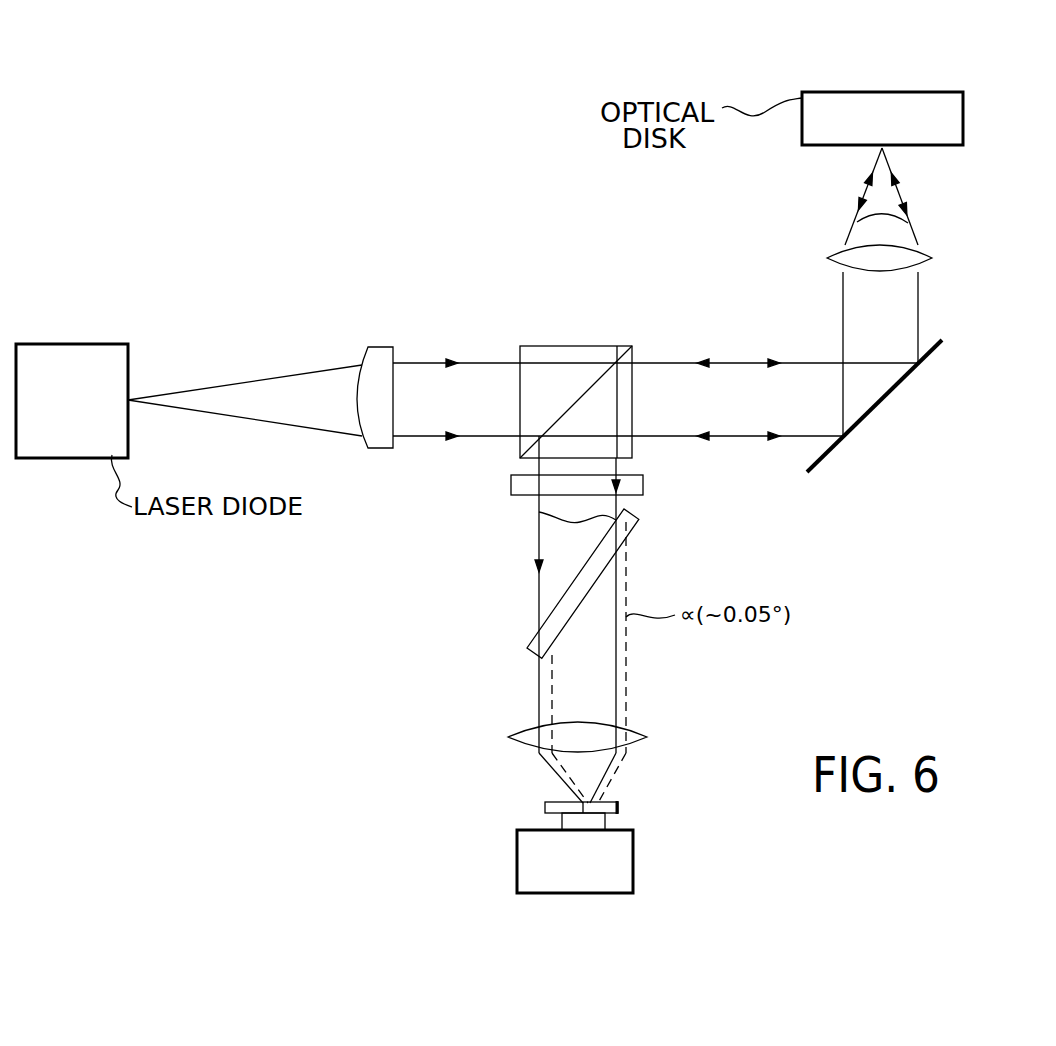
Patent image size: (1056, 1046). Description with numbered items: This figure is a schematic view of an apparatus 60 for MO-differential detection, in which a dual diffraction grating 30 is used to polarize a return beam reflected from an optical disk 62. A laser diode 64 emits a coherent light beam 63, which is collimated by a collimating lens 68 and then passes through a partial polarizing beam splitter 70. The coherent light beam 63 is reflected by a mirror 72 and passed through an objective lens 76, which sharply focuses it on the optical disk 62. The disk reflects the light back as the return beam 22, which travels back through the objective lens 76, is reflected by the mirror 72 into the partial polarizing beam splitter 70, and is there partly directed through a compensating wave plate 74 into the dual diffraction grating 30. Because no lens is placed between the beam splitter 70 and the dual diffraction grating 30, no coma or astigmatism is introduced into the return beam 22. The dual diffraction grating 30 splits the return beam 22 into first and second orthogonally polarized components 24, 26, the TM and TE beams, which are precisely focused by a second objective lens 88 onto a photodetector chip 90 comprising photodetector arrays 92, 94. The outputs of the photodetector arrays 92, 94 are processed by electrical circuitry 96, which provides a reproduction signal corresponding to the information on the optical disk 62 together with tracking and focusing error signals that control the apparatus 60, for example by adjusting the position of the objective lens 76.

The return beam 22 is at (685, 366).
The first orthogonally polarized component 24 is at (539, 694).
The second orthogonally polarized component 26 is at (626, 690).
The dual diffraction grating 30 is at (510, 640).
The apparatus 60 is at (417, 344).
The optical disk 62 is at (868, 130).
The coherent light beam 63 is at (790, 366).
The laser diode 64 is at (47, 413).
The collimating lens 68 is at (376, 450).
The partial polarizing beam splitter 70 is at (556, 350).
The mirror 72 is at (822, 463).
The compensating wave plate 74 is at (643, 482).
The objective lens 76 is at (925, 262).
The objective lens 88 is at (640, 735).
The photodetector chip 90 is at (620, 795).
The photodetector array 92 is at (545, 808).
The photodetector array 94 is at (610, 815).
The electrical circuitry 96 is at (560, 875).